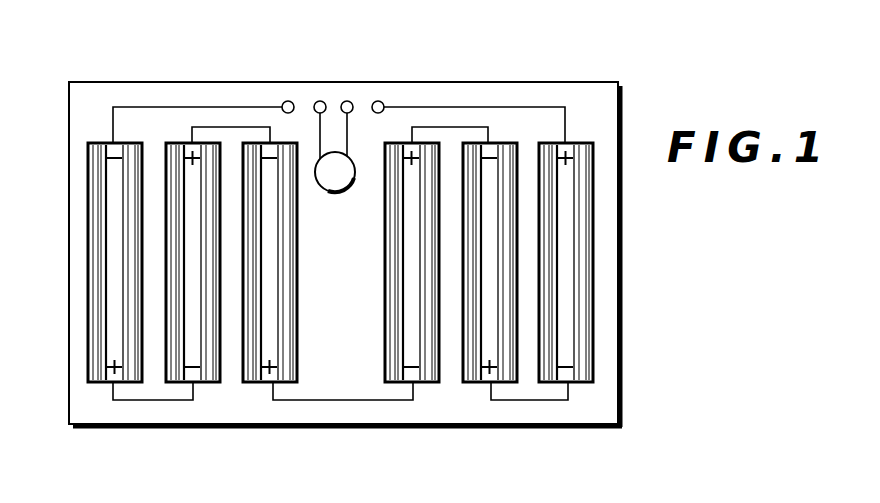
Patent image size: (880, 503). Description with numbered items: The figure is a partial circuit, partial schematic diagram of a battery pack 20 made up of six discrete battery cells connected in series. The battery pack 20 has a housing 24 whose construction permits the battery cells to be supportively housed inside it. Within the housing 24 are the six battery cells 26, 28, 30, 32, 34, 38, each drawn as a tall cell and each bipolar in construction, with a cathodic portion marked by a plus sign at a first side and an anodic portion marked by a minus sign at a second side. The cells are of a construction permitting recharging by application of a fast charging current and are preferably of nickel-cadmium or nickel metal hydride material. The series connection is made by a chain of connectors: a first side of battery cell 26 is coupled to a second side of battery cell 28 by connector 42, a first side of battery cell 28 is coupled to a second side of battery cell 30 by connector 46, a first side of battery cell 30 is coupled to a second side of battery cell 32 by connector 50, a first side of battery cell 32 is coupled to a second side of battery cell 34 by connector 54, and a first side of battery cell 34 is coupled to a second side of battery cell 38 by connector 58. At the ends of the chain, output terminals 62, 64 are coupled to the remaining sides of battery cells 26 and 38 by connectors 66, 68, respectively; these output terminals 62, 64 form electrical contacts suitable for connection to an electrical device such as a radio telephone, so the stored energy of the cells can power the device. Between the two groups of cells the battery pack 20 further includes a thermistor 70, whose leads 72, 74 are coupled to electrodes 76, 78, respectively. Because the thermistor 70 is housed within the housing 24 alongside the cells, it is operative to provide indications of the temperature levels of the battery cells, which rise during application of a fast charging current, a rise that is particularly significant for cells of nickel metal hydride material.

The battery pack 20 is at (730, 204).
The housing 24 is at (623, 113).
The battery cell 26 is at (108, 232).
The battery cell 28 is at (220, 383).
The battery cell 30 is at (288, 260).
The battery cell 32 is at (395, 328).
The battery cell 34 is at (465, 383).
The battery cell 38 is at (580, 294).
The connector 42 is at (157, 400).
The connector 46 is at (236, 127).
The connector 50 is at (340, 400).
The connector 54 is at (452, 127).
The connector 58 is at (530, 400).
The output terminal 62 is at (289, 101).
The output terminal 64 is at (381, 101).
The connector 66 is at (175, 107).
The connector 68 is at (533, 106).
The thermistor 70 is at (340, 192).
The lead 72 is at (320, 131).
The lead 74 is at (347, 130).
The electrode 76 is at (322, 101).
The electrode 78 is at (348, 101).